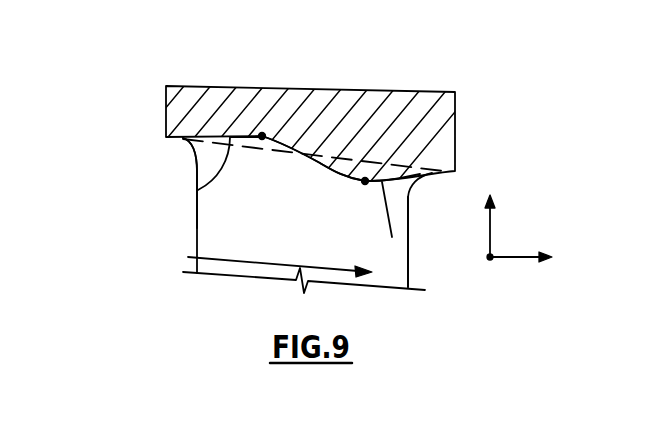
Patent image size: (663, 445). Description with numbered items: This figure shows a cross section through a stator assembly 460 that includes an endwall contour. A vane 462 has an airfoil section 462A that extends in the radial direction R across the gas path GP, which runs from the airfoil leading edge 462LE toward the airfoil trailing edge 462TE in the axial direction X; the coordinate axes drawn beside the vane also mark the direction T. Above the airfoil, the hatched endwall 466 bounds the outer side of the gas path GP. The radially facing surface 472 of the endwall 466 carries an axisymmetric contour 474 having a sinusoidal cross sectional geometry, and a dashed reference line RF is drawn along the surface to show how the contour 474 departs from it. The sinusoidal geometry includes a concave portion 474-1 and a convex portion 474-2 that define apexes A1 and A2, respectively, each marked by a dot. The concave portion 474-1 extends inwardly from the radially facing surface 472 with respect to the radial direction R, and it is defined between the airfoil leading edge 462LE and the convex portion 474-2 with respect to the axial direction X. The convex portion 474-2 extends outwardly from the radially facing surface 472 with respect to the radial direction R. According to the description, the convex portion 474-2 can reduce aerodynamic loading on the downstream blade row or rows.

The stator assembly 460 is at (200, 63).
The endwall 466 is at (325, 88).
The vane 462 is at (196, 174).
The axisymmetric contour 474 is at (320, 164).
The concave portion 474-1 is at (198, 189).
The convex portion 474-2 is at (392, 237).
The apex A1 is at (262, 133).
The apex A2 is at (365, 184).
The reference line RF is at (278, 153).
The radially facing surface 472 is at (437, 173).
The airfoil leading edge 462LE is at (196, 228).
The airfoil trailing edge 462TE is at (408, 270).
The airfoil section 462A is at (183, 268).
The gas path GP is at (267, 263).
The radial direction R is at (490, 214).
The axial direction X is at (528, 259).
The tangential direction T is at (490, 258).